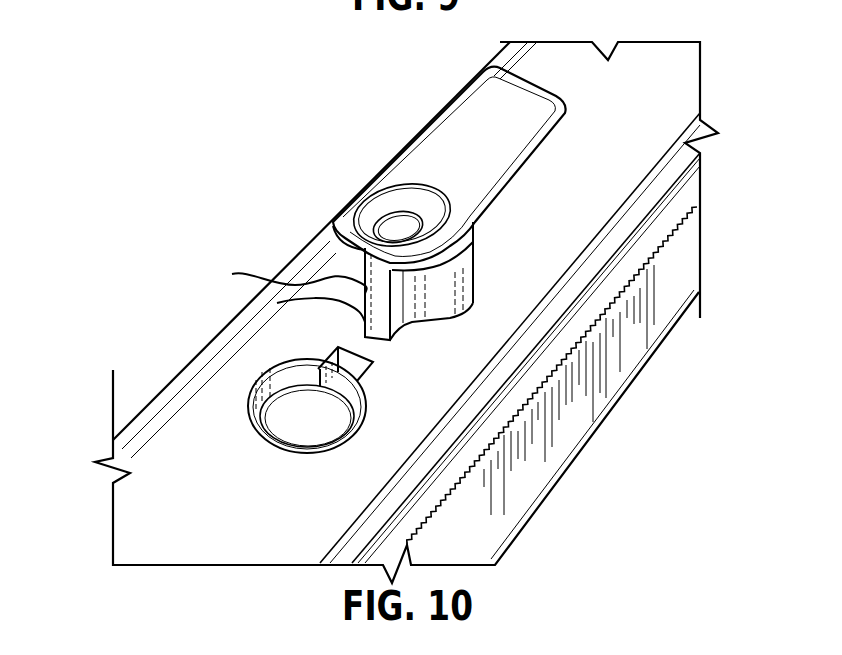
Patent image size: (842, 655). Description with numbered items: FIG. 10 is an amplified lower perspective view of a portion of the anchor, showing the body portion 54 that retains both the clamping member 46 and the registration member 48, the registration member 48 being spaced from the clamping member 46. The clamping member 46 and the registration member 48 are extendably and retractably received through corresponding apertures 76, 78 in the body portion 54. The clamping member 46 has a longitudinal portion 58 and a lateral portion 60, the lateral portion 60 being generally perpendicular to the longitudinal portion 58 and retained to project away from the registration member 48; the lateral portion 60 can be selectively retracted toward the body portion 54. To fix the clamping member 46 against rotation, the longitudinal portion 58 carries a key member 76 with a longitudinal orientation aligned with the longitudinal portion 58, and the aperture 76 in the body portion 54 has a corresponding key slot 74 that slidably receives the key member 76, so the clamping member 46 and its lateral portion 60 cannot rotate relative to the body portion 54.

The clamping member 46 is at (548, 60).
The registration member 48 is at (304, 407).
The body portion 54 is at (688, 246).
The longitudinal portion 58 is at (468, 278).
The lateral portion 60 is at (435, 140).
The key slot 74 is at (288, 282).
The key member 76 is at (283, 304).
The aperture 78 is at (270, 378).